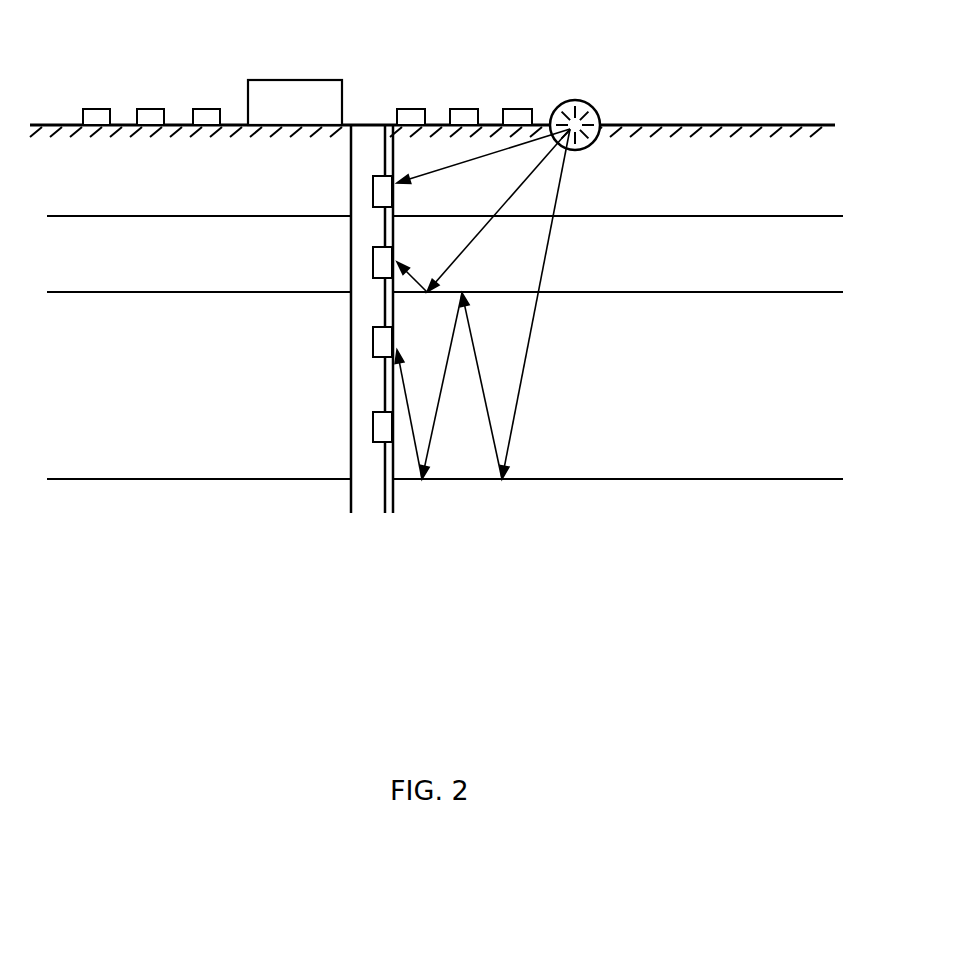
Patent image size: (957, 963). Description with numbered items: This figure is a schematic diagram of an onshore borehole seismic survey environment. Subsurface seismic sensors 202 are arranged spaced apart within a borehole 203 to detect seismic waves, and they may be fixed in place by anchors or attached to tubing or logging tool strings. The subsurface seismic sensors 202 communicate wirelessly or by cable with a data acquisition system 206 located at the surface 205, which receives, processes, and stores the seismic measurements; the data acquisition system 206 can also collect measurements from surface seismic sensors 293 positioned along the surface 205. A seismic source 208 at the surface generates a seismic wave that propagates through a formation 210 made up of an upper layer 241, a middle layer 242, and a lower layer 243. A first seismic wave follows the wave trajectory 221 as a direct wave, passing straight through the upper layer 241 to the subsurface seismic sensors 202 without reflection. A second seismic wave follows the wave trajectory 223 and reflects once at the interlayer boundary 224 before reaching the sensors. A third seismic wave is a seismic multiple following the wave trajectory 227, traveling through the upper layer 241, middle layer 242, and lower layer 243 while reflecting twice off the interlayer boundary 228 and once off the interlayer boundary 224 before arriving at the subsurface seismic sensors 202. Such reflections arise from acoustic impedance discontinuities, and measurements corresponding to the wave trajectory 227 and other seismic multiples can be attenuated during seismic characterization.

The subsurface seismic sensors 202 is at (373, 191).
The borehole 203 is at (350, 465).
The surface 205 is at (778, 125).
The data acquisition system 206 is at (260, 80).
The seismic source 208 is at (591, 104).
The formation 210 is at (486, 302).
The wave trajectory 221 is at (418, 180).
The wave trajectory 223 is at (452, 271).
The interlayer boundary 224 is at (581, 291).
The wave trajectory 227 is at (524, 382).
The interlayer boundary 228 is at (613, 478).
The upper layer 241 is at (718, 192).
The middle layer 242 is at (445, 267).
The lower layer 243 is at (445, 427).
The surface seismic sensors 293 is at (97, 109).